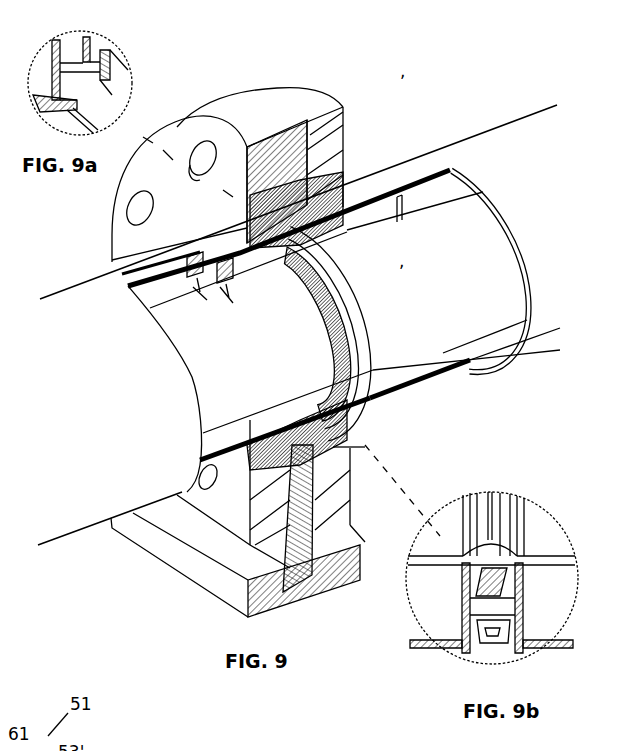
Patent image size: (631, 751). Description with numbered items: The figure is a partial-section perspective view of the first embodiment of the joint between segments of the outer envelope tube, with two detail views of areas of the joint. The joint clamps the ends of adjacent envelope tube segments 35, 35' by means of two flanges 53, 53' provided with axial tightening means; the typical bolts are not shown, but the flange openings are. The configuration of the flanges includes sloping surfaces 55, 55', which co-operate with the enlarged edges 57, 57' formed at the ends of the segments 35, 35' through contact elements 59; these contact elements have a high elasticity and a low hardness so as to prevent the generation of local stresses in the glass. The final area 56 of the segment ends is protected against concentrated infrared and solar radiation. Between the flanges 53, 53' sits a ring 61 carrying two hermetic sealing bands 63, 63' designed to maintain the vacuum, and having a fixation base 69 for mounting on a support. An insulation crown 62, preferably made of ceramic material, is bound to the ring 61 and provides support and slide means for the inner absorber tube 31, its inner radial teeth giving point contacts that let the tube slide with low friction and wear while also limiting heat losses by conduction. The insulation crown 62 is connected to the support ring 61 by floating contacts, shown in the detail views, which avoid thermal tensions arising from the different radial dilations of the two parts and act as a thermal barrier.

The inner absorber tube 31 is at (437, 337).
The segment of envelope tube 35 is at (297, 344).
The segment of envelope tube 35' is at (386, 394).
The flange 53 is at (179, 159).
The flange 53' is at (260, 128).
The sloping surface 55 is at (289, 173).
The sloping surface 55' is at (415, 145).
The final area 56 is at (257, 427).
The enlarged edge 57 is at (293, 265).
The enlarged edge 57' is at (328, 270).
The contact element 59 is at (347, 187).
The ring 61 is at (270, 117).
The insulation crown 62 is at (360, 397).
The hermetic sealing band 63 is at (333, 518).
The hermetic sealing band 63' is at (386, 490).
The fixation base 69 is at (240, 598).